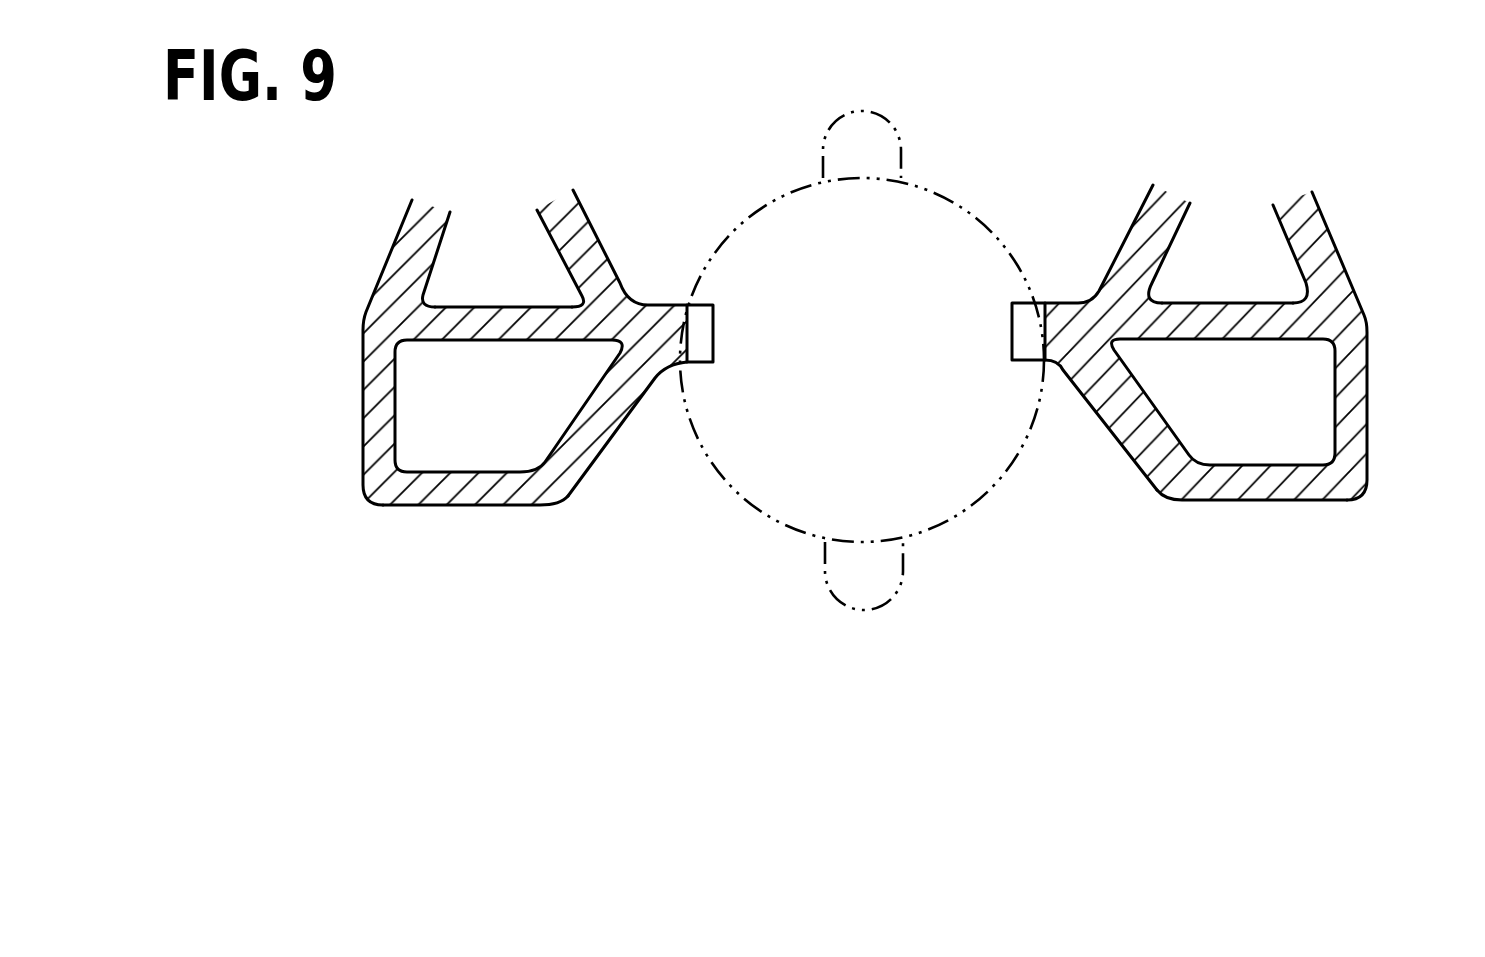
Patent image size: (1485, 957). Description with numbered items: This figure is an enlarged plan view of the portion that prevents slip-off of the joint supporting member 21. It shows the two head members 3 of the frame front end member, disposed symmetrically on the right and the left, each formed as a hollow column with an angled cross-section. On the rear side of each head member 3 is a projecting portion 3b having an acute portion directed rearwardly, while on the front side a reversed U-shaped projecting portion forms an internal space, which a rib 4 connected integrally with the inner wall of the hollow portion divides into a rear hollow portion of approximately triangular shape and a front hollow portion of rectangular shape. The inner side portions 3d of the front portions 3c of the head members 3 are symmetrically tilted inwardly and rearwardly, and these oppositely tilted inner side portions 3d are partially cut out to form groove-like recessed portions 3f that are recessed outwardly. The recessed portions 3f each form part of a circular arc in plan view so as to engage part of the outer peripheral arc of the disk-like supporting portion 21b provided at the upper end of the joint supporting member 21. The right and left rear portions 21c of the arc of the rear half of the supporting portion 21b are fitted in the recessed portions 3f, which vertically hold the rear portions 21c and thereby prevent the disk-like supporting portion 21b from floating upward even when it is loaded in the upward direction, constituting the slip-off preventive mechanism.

The head member 3 is at (362, 400).
The projecting portion 3b is at (584, 211).
The front portion 3c is at (492, 508).
The inner side portion 3d is at (592, 464).
The groove-like recessed portion 3f is at (690, 316).
The rib 4 is at (487, 306).
The joint supporting member 21 is at (922, 165).
The disk-like supporting portion 21b is at (767, 517).
The rear portion 21c is at (670, 343).